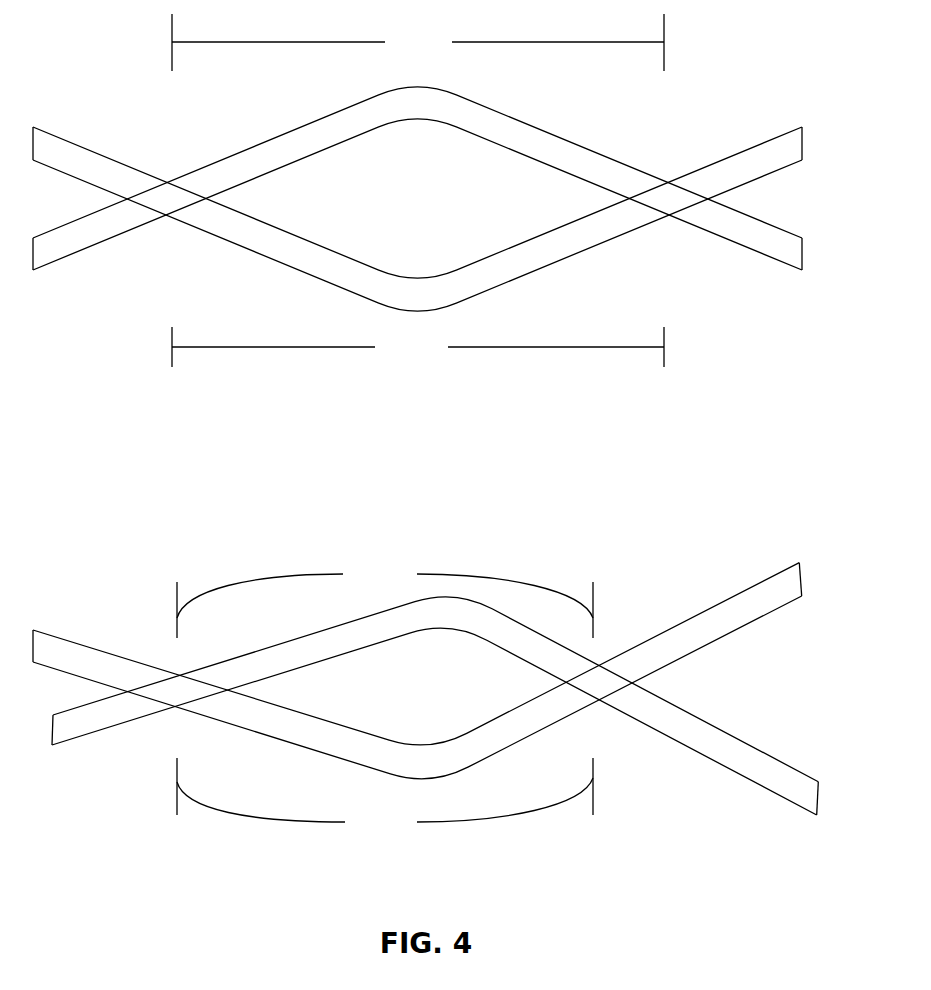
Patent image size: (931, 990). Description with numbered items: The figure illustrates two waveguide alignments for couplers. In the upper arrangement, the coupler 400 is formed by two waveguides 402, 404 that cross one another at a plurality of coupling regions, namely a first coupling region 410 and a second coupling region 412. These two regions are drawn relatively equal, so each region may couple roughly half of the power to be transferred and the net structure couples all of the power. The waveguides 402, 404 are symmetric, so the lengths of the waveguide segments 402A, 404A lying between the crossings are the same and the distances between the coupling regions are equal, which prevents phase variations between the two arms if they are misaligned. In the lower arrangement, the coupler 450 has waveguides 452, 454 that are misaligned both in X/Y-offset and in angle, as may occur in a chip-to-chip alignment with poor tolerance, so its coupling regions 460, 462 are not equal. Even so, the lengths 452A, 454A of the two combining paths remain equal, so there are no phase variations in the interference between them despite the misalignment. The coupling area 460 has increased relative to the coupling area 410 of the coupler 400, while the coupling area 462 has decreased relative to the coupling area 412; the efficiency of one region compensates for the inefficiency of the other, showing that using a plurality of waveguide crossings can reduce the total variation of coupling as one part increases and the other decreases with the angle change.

The coupler 400 is at (403, 200).
The waveguide 402 is at (48, 150).
The waveguide 404 is at (48, 247).
The coupling region 410 is at (168, 197).
The coupling region 412 is at (665, 197).
The waveguide segment 404A is at (418, 42).
The waveguide segment 402A is at (418, 347).
The coupler 450 is at (413, 696).
The waveguide 452 is at (57, 647).
The waveguide 454 is at (53, 747).
The coupling region 460 is at (177, 695).
The coupling region 462 is at (597, 685).
The waveguide segment length 454A is at (385, 601).
The waveguide segment length 452A is at (385, 795).